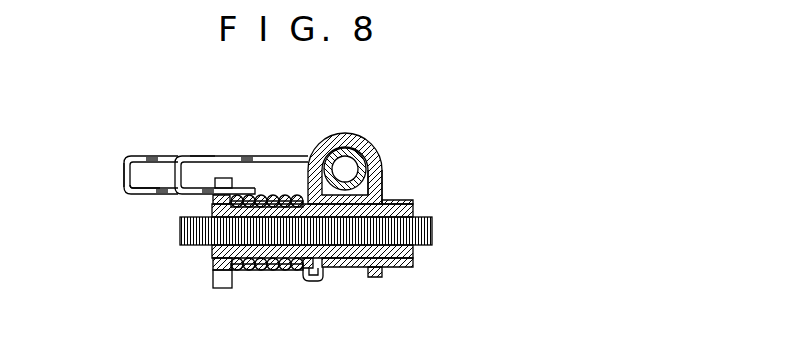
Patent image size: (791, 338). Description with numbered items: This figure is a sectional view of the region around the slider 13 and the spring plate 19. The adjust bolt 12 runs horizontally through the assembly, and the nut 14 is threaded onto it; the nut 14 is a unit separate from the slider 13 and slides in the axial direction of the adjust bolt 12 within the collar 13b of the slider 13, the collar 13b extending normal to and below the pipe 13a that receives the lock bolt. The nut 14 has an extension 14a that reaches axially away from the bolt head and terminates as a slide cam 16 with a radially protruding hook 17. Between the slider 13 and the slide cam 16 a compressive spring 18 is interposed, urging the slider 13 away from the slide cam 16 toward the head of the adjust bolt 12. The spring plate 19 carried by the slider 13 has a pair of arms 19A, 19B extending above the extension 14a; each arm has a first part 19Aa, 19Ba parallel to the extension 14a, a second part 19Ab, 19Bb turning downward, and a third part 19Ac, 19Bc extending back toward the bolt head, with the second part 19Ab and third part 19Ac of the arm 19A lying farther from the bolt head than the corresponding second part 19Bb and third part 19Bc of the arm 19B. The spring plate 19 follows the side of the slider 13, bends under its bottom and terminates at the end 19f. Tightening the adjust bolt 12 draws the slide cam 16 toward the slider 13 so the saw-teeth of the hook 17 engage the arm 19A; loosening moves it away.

The adjust bolt 12 is at (190, 247).
The slider 13 is at (357, 144).
The pipe 13a is at (379, 163).
The collar 13b is at (354, 268).
The nut 14 is at (392, 200).
The extension 14a is at (283, 262).
The slide cam 16 is at (205, 163).
The hook 17 is at (225, 178).
The compressive spring 18 is at (248, 268).
The spring plate 19 is at (312, 156).
The arm 19A is at (137, 155).
The first part 19Aa is at (158, 155).
The second part 19Ab is at (127, 172).
The third part 19Ac is at (158, 196).
The arm 19B is at (253, 187).
The first part 19Ba is at (224, 157).
The second part 19Bb is at (147, 184).
The third part 19Bc is at (188, 194).
The spring plate end 19f is at (313, 282).